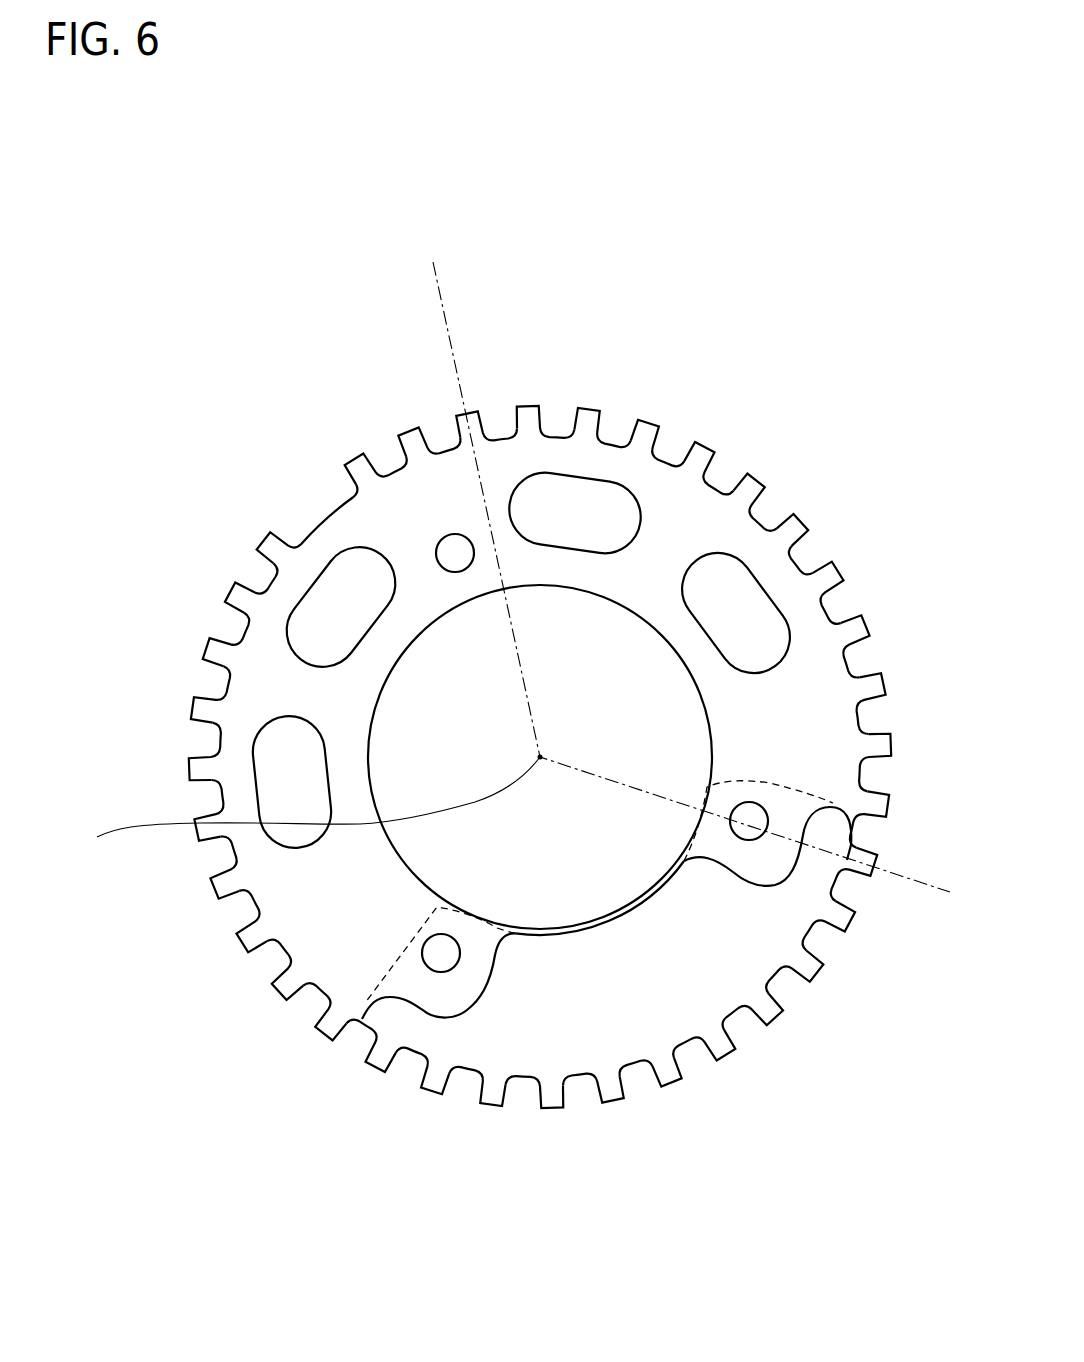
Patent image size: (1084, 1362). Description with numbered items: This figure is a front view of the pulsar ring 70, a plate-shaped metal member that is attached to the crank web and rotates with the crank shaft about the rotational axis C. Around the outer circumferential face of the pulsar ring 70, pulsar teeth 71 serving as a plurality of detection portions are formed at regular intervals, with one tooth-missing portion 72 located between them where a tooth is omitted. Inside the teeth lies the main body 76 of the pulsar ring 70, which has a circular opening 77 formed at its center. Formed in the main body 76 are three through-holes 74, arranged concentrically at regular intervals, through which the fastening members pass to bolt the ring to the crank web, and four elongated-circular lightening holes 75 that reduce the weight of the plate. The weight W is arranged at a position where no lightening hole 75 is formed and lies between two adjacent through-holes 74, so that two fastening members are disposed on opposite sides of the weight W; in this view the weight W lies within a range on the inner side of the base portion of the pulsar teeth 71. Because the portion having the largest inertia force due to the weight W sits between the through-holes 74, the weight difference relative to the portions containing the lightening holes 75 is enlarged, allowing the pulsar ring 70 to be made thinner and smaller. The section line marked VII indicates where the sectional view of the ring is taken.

The pulsar ring 70 is at (573, 240).
The pulsar teeth 71 is at (228, 591).
The tooth-missing portion 72 is at (311, 521).
The through-holes 74 is at (451, 545).
The lightening holes 75 is at (572, 520).
The main body 76 is at (656, 471).
The circular opening 77 is at (578, 880).
The weight W is at (523, 1045).
The rotational axis C is at (97, 837).
The section line VII- VII is at (477, 275).